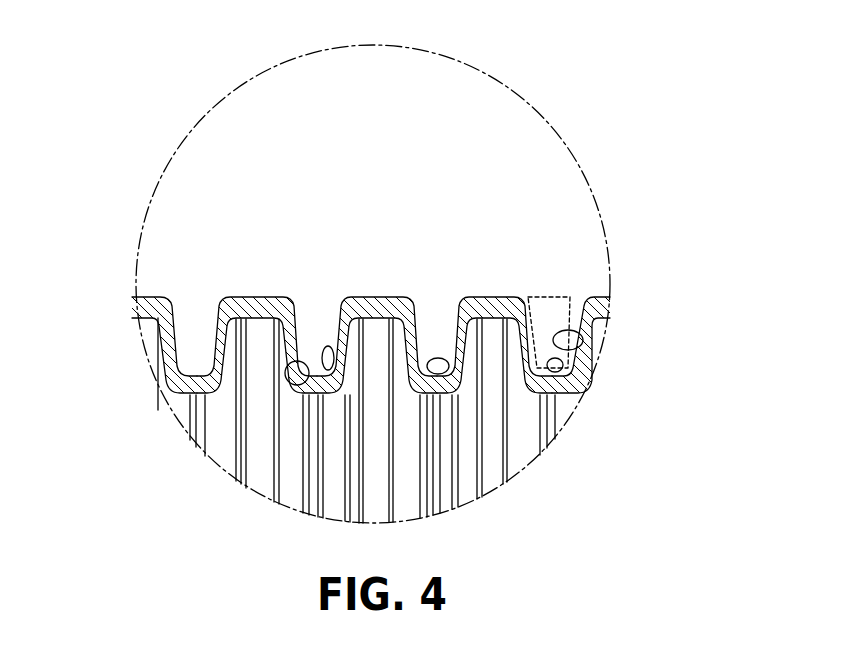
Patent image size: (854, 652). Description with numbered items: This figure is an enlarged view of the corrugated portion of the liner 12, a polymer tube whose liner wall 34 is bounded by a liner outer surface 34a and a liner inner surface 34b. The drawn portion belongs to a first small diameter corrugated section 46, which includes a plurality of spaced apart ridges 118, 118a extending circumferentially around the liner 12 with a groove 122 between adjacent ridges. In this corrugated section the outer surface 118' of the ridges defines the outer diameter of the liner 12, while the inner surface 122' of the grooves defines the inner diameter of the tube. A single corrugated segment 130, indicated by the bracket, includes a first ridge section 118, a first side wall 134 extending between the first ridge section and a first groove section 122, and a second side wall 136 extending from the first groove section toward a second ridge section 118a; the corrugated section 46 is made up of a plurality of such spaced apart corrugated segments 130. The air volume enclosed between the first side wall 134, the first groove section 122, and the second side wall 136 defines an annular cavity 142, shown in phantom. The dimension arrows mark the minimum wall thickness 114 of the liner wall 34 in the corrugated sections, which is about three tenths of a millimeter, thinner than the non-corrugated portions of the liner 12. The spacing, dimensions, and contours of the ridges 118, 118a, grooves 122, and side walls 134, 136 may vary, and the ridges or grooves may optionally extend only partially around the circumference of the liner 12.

The liner 12 is at (440, 200).
The liner wall 34 is at (602, 312).
The liner outer surface 34a is at (148, 297).
The liner inner surface 34b is at (157, 353).
The first small diameter corrugated section 46 is at (264, 468).
The minimum wall thickness 114 is at (200, 418).
The ridge 118 is at (257, 310).
The ridge 118a is at (380, 297).
The outer surface of the ridges 118' is at (494, 306).
The groove 122 is at (410, 443).
The inner surface of the grooves 122' is at (451, 469).
The corrugated segment 130 is at (378, 265).
The first side wall 134 is at (548, 308).
The second side wall 136 is at (552, 340).
The annular cavity 142 is at (556, 296).